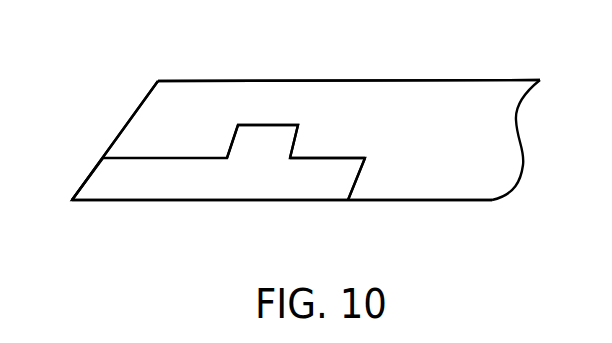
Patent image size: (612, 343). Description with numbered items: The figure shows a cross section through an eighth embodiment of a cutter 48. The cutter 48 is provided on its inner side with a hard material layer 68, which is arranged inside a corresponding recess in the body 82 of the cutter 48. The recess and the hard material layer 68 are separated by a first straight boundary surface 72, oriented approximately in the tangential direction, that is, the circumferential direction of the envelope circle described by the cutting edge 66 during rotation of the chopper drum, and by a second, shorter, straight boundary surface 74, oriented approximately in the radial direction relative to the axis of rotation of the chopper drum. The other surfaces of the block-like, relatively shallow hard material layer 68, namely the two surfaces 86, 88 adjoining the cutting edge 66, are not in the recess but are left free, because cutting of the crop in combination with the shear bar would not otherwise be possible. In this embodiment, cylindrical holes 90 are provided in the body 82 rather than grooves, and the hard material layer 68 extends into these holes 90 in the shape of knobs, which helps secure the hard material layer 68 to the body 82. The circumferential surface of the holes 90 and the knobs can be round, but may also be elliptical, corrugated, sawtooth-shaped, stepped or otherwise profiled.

The cutter 48 is at (495, 57).
The body 82 is at (393, 92).
The surface adjoining the cutting edge 88 is at (89, 176).
The cutting edge 66 is at (72, 200).
The surface adjoining the cutting edge 86 is at (282, 199).
The hard material layer 68 is at (195, 185).
The cylindrical holes 90 is at (265, 137).
The first straight boundary surface 72 is at (327, 156).
The second straight boundary surface 74 is at (360, 180).